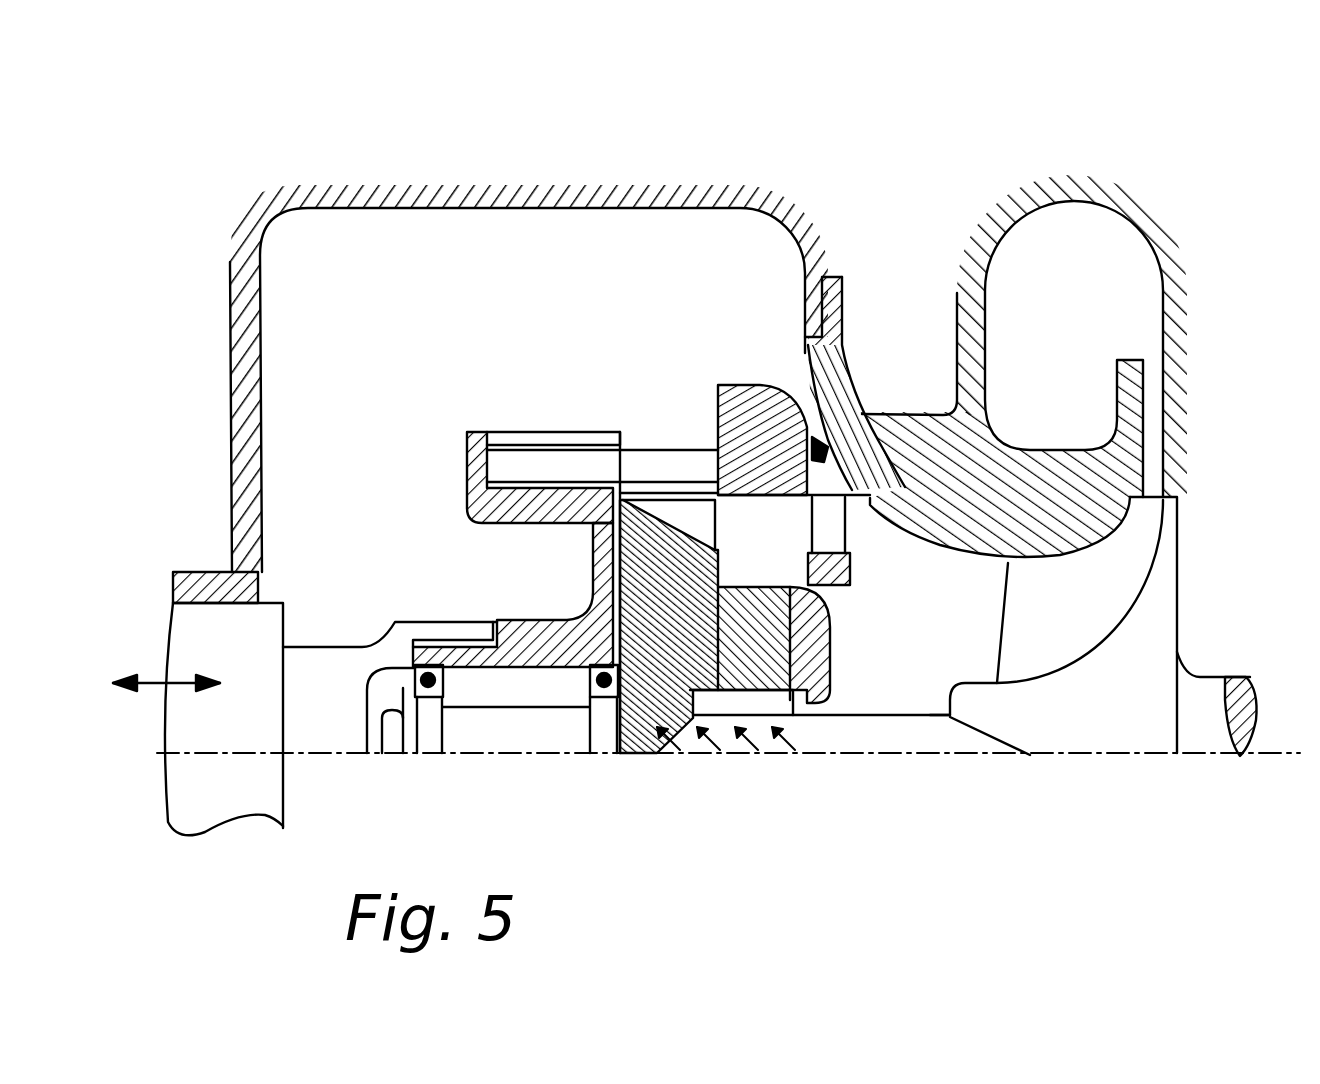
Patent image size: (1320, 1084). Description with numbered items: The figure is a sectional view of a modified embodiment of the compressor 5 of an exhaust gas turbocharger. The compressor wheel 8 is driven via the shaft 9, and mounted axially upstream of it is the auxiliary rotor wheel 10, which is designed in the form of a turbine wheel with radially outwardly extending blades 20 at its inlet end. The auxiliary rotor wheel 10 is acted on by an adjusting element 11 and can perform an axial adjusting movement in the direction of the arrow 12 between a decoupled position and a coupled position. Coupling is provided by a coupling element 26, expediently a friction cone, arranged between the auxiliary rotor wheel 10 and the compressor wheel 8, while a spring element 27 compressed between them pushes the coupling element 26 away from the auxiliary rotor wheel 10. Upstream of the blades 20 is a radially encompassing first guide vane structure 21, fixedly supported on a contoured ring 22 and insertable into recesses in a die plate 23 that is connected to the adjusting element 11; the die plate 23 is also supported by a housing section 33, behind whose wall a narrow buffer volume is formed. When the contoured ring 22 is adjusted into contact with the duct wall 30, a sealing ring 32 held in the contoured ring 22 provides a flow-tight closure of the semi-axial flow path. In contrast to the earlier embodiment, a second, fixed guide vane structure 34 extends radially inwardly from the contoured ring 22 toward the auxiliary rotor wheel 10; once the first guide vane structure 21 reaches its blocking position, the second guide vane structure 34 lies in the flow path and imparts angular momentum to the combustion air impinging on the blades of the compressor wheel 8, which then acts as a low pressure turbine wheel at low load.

The compressor 5 is at (866, 106).
The compressor wheel 8 is at (1092, 723).
The shaft 9 is at (1202, 685).
The auxiliary rotor wheel 10 is at (635, 723).
The adjusting element 11 is at (182, 812).
The arrow 12 is at (166, 658).
The blades 20 is at (703, 522).
The guide vane structure 21 is at (653, 450).
The contoured ring 22 is at (740, 384).
The die plate 23 is at (463, 458).
The coupling element 26 is at (897, 730).
The spring element 27 is at (700, 745).
The duct wall 30 is at (852, 488).
The sealing ring 32 is at (807, 345).
The housing section 33 is at (598, 563).
The second guide vane structure 34 is at (837, 535).